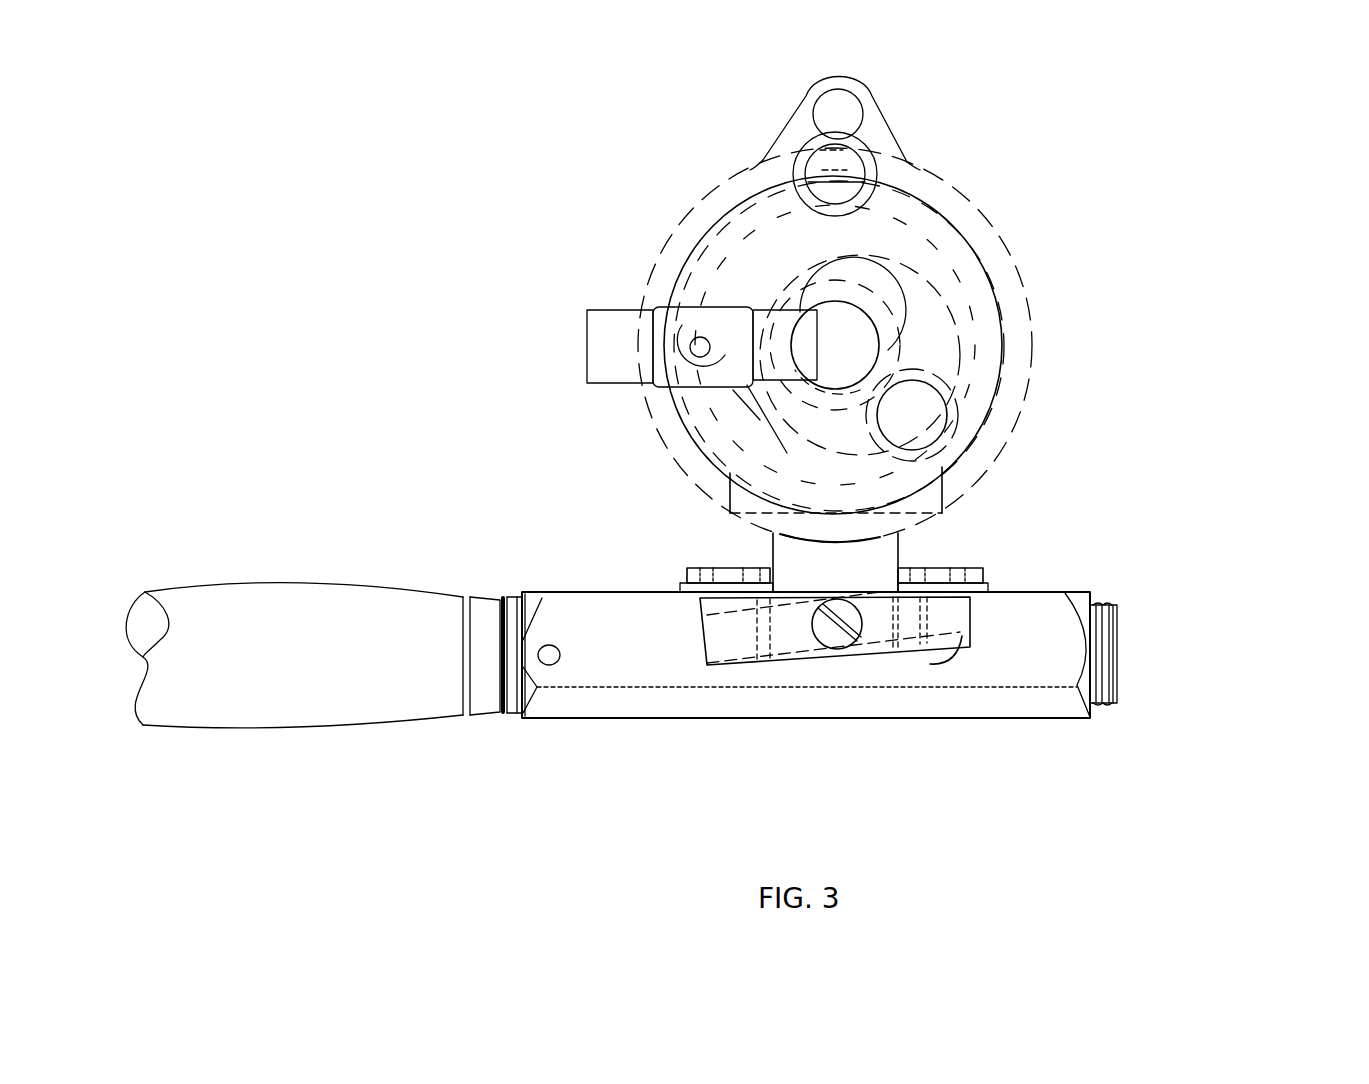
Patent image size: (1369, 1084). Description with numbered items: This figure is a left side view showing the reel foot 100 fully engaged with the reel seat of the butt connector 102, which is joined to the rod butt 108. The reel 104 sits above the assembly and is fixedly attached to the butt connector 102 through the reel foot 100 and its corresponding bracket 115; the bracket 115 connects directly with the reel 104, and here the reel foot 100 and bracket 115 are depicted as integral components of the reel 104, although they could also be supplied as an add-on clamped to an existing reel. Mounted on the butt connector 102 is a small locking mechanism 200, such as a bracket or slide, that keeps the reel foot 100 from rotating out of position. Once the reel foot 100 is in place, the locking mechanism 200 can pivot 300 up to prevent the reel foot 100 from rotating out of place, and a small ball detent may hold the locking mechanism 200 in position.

The reel foot 100 is at (677, 582).
The butt connector 102 is at (550, 725).
The reel 104 is at (932, 240).
The butt 108 is at (270, 610).
The bracket 115 is at (903, 540).
The locking mechanism 200 is at (985, 618).
The pivot 300 is at (953, 663).